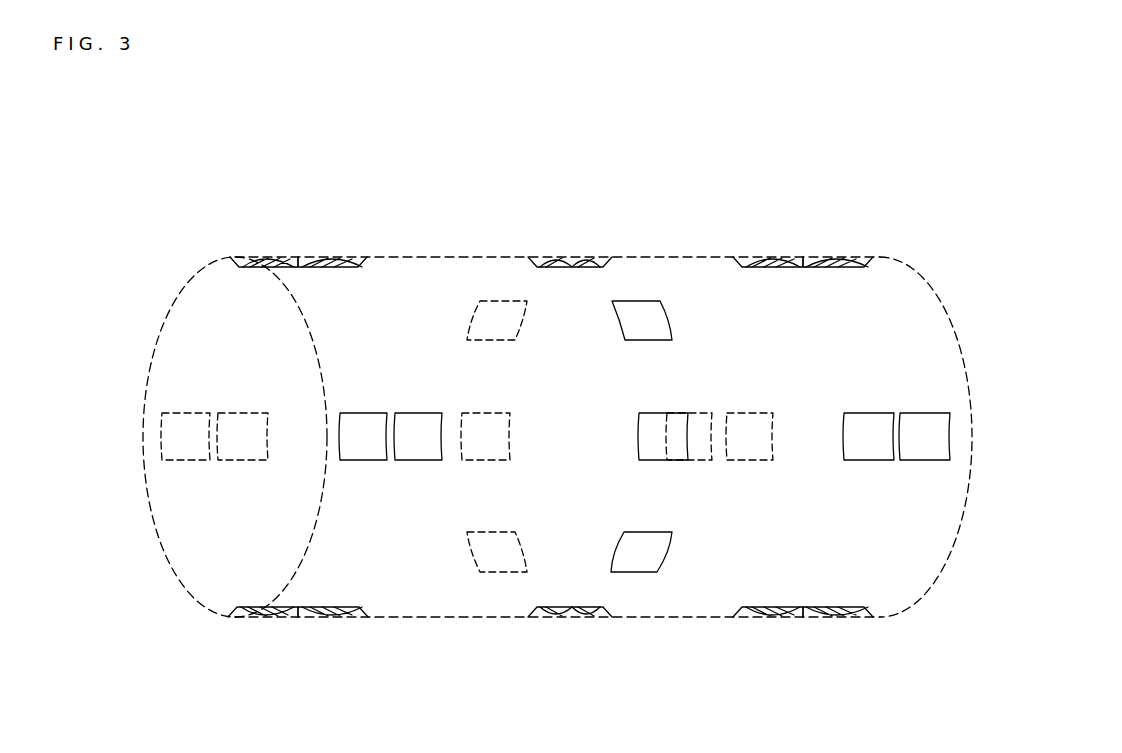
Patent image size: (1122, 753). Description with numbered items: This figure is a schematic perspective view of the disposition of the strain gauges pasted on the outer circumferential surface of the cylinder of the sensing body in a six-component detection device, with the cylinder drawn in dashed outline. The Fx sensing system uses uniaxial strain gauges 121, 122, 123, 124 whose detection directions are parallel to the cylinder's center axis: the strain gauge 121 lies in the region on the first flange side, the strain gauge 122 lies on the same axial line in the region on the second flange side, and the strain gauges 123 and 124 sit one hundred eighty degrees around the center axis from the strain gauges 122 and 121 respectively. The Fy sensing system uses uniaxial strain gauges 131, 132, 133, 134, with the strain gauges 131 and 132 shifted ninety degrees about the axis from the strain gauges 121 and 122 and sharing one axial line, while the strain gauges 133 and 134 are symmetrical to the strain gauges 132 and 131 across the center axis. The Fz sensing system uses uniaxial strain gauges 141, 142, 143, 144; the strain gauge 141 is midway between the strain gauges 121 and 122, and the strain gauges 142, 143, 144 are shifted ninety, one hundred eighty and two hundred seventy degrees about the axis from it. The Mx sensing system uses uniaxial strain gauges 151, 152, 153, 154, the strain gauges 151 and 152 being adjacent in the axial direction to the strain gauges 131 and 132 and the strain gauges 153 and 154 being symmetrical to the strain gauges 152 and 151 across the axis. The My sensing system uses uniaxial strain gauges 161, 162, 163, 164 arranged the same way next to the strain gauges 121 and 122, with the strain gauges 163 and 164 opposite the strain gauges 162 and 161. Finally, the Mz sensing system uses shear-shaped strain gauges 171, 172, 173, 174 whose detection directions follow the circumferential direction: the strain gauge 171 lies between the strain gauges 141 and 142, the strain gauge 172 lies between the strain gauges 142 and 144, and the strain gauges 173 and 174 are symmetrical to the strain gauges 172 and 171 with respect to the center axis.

The strain gauge 121 is at (267, 257).
The strain gauge 122 is at (815, 257).
The strain gauge 123 is at (833, 617).
The strain gauge 124 is at (277, 617).
The strain gauge 131 is at (346, 419).
The strain gauge 132 is at (925, 420).
The strain gauge 133 is at (770, 433).
The strain gauge 134 is at (162, 444).
The strain gauge 141 is at (572, 257).
The strain gauge 142 is at (676, 413).
The strain gauge 143 is at (490, 413).
The strain gauge 144 is at (570, 617).
The strain gauge 151 is at (419, 460).
The strain gauge 152 is at (857, 458).
The strain gauge 153 is at (713, 418).
The strain gauge 154 is at (223, 453).
The strain gauge 161 is at (330, 257).
The strain gauge 162 is at (782, 257).
The strain gauge 163 is at (773, 617).
The strain gauge 164 is at (330, 617).
The strain gauge 171 is at (639, 301).
The strain gauge 172 is at (652, 572).
The strain gauge 173 is at (498, 301).
The strain gauge 174 is at (497, 572).